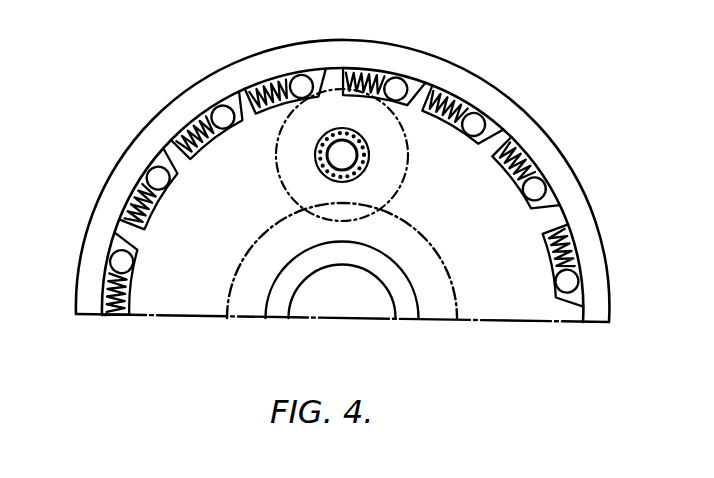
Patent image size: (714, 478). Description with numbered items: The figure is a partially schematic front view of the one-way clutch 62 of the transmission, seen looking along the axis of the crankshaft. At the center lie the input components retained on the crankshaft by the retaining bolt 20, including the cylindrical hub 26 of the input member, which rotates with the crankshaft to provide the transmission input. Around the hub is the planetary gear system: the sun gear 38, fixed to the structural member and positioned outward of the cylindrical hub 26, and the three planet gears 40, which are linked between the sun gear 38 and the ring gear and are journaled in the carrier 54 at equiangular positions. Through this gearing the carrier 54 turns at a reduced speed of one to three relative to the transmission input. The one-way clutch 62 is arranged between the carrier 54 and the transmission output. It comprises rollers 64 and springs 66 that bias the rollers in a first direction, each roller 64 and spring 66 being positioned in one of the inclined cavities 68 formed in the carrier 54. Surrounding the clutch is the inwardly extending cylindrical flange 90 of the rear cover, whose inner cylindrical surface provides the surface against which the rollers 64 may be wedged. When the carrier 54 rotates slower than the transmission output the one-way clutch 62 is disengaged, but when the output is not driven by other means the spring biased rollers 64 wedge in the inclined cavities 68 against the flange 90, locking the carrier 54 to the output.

The retaining bolt 20 is at (330, 308).
The cylindrical hub 26 is at (407, 310).
The sun gear 38 is at (432, 312).
The planet gears 40 is at (342, 86).
The carrier 54 is at (508, 137).
The one-way clutch 62 is at (371, 181).
The rollers 64 is at (143, 177).
The springs 66 is at (193, 118).
The inclined cavities 68 is at (223, 98).
The inwardly extending cylindrical flange 90 is at (482, 97).